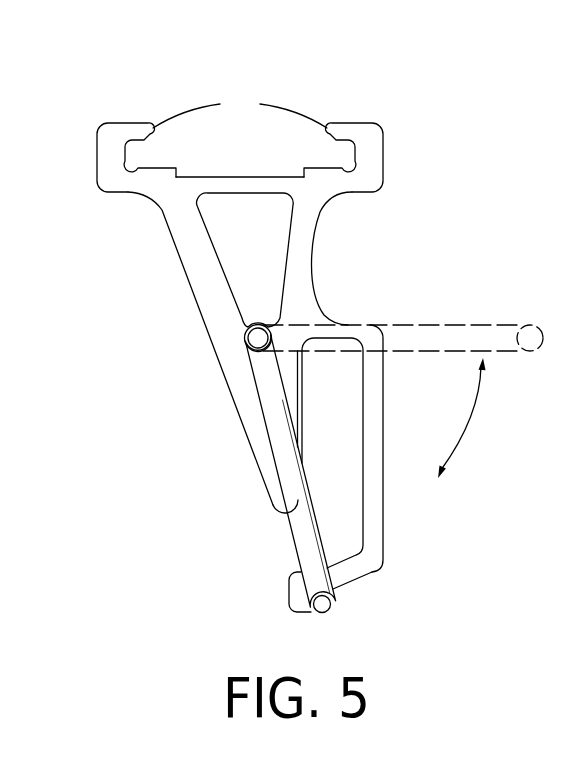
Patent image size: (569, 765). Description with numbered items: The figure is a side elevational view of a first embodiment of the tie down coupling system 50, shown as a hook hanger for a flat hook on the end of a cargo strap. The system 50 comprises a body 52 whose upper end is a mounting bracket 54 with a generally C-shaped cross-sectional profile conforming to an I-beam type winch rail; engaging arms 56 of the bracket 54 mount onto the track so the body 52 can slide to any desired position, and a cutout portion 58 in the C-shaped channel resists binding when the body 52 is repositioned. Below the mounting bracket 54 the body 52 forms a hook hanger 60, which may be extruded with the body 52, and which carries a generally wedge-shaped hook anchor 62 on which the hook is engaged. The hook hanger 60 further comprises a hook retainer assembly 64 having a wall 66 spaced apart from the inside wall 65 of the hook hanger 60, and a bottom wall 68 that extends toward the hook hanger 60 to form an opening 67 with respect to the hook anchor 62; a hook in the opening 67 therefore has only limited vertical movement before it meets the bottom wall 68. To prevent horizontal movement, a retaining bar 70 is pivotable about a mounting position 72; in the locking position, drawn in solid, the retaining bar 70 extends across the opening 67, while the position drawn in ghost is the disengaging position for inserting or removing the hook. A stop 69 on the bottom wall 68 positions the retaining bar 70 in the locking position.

The tie down coupling system 50 is at (425, 152).
The body 52 is at (200, 333).
The mounting bracket 54 is at (118, 92).
The engaging arms 56 is at (240, 110).
The cutout portion 58 is at (213, 177).
The hook hanger 60 is at (242, 420).
The hook anchor 62 is at (272, 507).
The hook retainer assembly 64 is at (392, 528).
The inside wall 65 is at (303, 392).
The wall 66 is at (384, 398).
The opening 67 is at (346, 449).
The bottom wall 68 is at (364, 578).
The stop 69 is at (288, 604).
The retaining bar 70 is at (290, 553).
The mounting position 72 is at (260, 312).